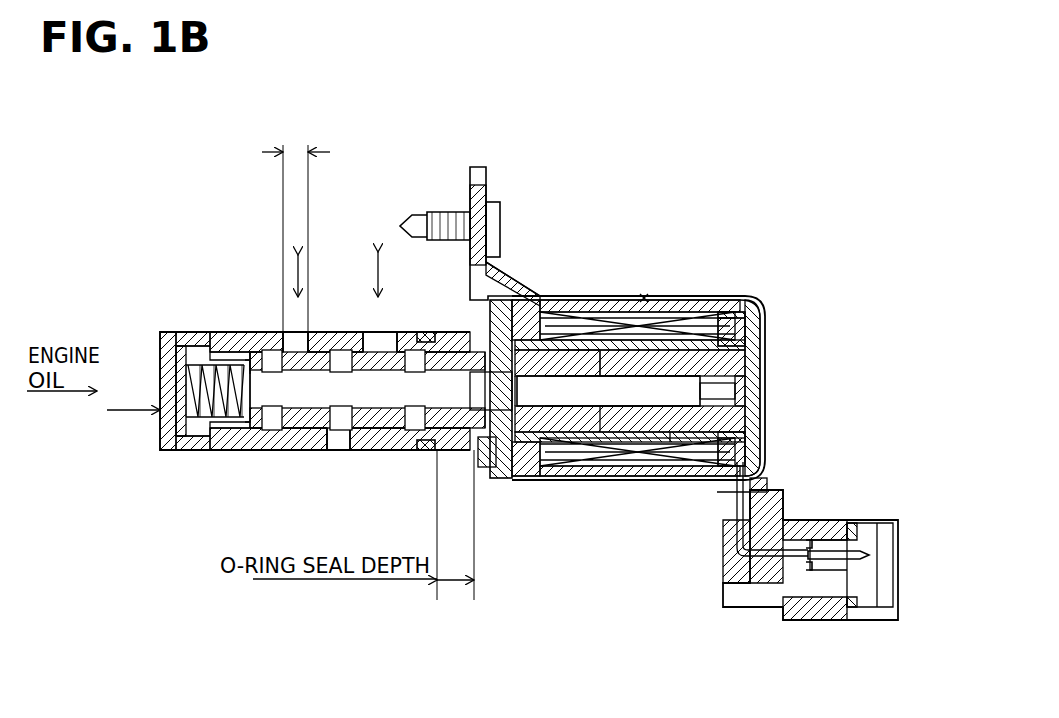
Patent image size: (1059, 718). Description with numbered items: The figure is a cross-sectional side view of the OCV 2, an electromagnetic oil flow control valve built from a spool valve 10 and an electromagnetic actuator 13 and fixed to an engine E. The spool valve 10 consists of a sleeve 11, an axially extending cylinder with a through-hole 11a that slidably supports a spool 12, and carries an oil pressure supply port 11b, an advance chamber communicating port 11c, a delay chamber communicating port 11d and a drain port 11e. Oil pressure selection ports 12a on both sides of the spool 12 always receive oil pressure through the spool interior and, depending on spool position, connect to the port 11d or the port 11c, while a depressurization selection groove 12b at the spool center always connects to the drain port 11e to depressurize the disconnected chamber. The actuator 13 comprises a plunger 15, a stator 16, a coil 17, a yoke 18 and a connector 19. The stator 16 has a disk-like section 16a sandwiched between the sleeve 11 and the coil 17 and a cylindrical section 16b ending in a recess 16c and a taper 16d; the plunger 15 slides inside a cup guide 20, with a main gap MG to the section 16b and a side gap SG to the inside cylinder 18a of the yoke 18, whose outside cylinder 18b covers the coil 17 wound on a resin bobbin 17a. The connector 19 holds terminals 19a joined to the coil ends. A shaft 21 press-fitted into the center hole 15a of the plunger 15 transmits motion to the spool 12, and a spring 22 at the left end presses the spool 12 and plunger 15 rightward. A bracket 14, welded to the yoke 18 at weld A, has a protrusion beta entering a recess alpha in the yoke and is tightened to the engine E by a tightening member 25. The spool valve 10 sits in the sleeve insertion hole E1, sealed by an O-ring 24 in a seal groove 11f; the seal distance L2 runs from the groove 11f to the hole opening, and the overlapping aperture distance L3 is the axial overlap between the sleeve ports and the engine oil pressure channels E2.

The OCV 2 is at (654, 576).
The spool valve 10 is at (198, 458).
The sleeve 11 is at (205, 345).
The through-hole 11a is at (242, 352).
The oil pressure supply port 11b is at (168, 432).
The advance chamber communicating port 11c is at (383, 345).
The delay chamber communicating port 11d is at (278, 345).
The drain port 11e is at (337, 452).
The seal groove 11f is at (425, 452).
The spool 12 is at (187, 340).
The oil pressure selection port 12a is at (266, 350).
The depressurization selection groove 12b is at (337, 350).
The electromagnetic actuator 13 is at (737, 288).
The bracket 14 is at (627, 300).
The plunger 15 is at (738, 378).
The center hole 15a is at (745, 396).
The stator 16 is at (530, 500).
The disk-like section 16a is at (492, 500).
The cylindrical section 16b is at (527, 480).
The recess 16c is at (560, 432).
The taper 16d is at (590, 442).
The coil 17 is at (702, 322).
The resin bobbin 17a is at (692, 328).
The yoke 18 is at (850, 282).
The inside cylinder 18a is at (760, 338).
The outside cylinder 18b is at (760, 306).
The connector 19 is at (848, 512).
The terminals 19a is at (830, 566).
The cup guide 20 is at (745, 406).
The shaft 21 is at (586, 392).
The spring 22 is at (160, 335).
The O-ring 24 is at (460, 243).
The tightening member 25 is at (497, 217).
The engine E is at (481, 172).
The sleeve insertion hole E1 is at (240, 455).
The oil pressure channels E2 is at (100, 452).
The seal distance L2 is at (456, 582).
The overlapping aperture distance L3 is at (294, 150).
The weld A is at (645, 296).
The magnetically attracting gap MG is at (603, 432).
The magnetic flux interchange gap SG is at (672, 442).
The recess alpha is at (548, 298).
The protrusion beta is at (566, 302).